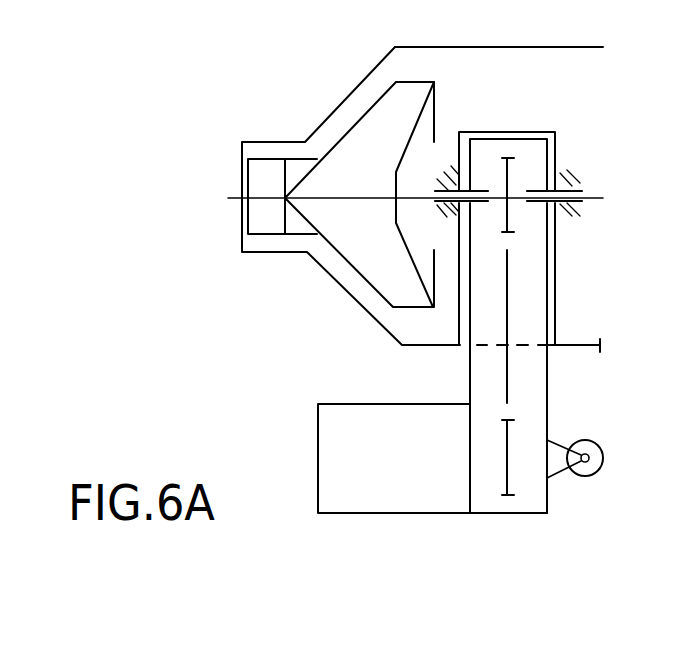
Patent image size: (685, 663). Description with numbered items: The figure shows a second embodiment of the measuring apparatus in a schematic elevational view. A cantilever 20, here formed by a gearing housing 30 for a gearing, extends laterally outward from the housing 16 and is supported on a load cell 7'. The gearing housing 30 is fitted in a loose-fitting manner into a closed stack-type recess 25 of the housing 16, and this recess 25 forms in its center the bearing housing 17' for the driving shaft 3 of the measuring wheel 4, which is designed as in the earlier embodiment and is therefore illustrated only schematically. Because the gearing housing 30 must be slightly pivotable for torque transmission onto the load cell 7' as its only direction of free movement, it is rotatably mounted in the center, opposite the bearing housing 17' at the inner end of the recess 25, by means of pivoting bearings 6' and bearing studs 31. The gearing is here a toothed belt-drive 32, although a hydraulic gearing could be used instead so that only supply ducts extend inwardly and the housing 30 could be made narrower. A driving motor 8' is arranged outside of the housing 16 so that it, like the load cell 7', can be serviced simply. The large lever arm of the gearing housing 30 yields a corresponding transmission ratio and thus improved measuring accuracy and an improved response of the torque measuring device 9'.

The driving shaft 3 is at (413, 196).
The measuring wheel 4 is at (375, 293).
The housing 16 is at (327, 274).
The pivoting bearings 6' is at (525, 152).
The bearing studs 31 is at (479, 190).
The gearing housing 30 is at (549, 308).
The bearing housing 17' is at (605, 206).
The cantilever 20 is at (563, 275).
The stack-type recess 25 is at (460, 273).
The belt-drive 32 is at (504, 337).
The driving motor 8' is at (421, 432).
The torque measuring device 9' is at (605, 444).
The load cell 7' is at (610, 463).